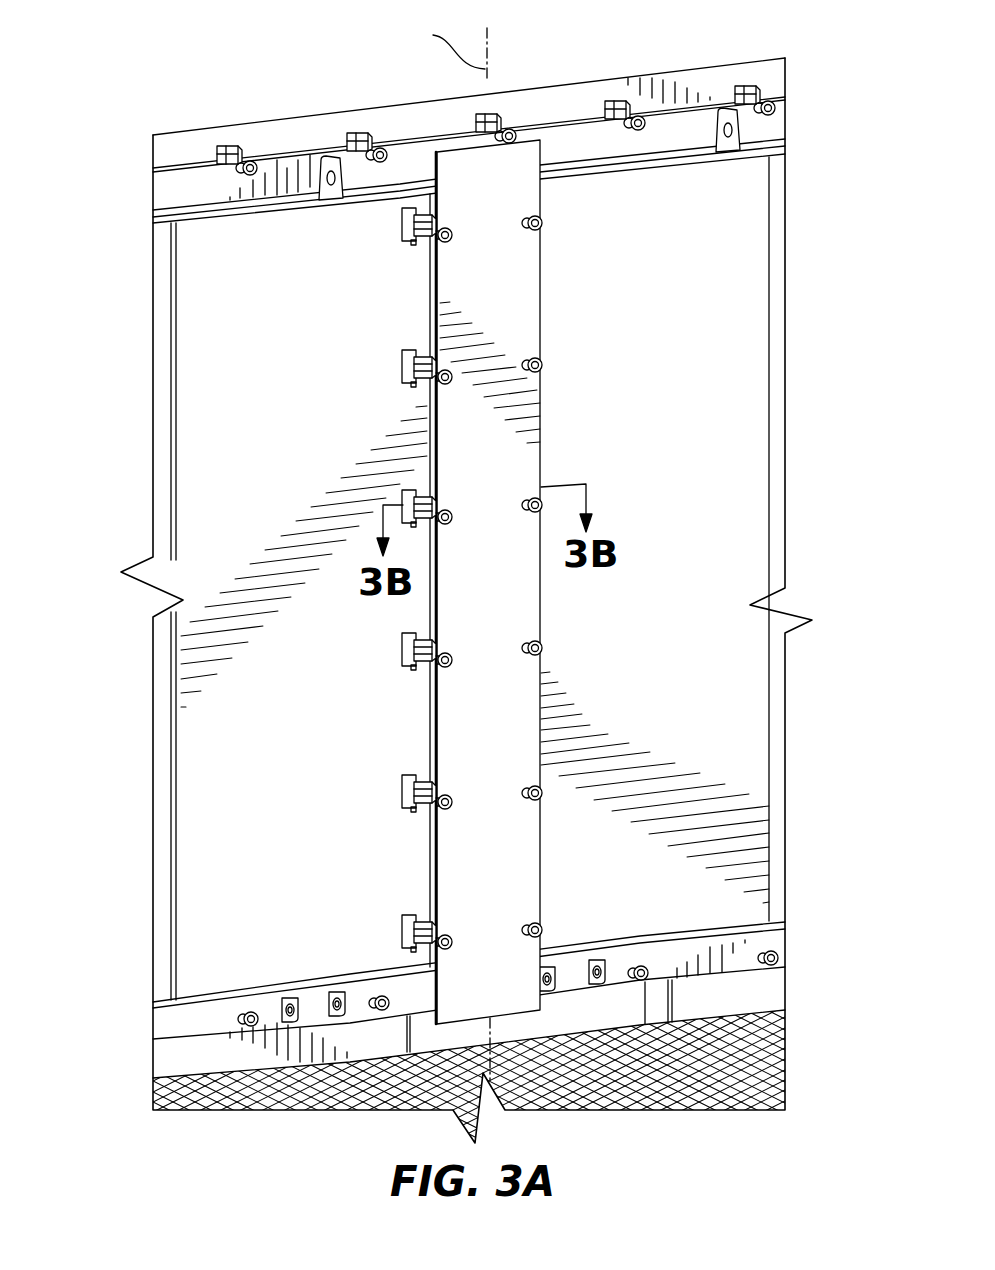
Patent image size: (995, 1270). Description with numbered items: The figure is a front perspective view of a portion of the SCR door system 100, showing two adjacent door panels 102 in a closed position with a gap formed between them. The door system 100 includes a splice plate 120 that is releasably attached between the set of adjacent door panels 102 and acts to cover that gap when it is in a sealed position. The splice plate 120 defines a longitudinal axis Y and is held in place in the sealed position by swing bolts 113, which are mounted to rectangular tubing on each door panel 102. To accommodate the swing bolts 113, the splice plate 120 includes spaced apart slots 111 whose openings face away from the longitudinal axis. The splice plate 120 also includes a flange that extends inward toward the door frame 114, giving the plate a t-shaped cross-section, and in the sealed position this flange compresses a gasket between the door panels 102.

The door system 100 is at (203, 75).
The door frame 114 is at (313, 110).
The splice plate 120 is at (512, 165).
The door panel 102 is at (198, 358).
The slot 111 is at (545, 505).
The swing bolt 113 is at (436, 652).